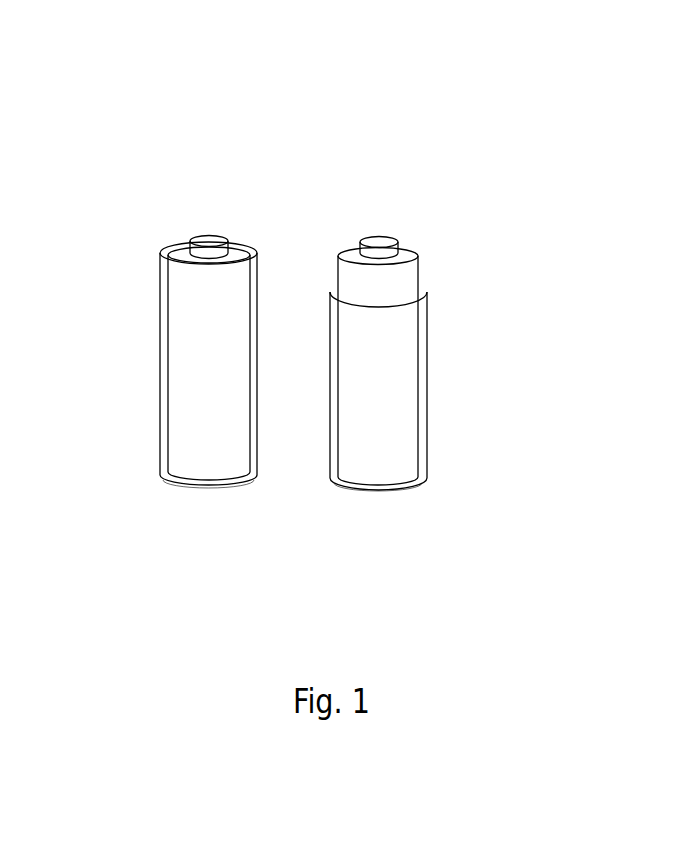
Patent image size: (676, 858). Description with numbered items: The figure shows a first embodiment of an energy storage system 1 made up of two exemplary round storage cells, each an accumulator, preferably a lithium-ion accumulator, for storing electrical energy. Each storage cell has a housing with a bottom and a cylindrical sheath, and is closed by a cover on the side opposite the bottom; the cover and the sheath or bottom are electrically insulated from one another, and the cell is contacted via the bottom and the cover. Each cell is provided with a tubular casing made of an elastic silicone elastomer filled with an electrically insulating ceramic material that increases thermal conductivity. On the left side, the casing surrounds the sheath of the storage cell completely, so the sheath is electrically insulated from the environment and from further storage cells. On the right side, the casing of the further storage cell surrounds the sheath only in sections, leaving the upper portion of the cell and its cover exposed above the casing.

The energy storage system 1 is at (316, 153).